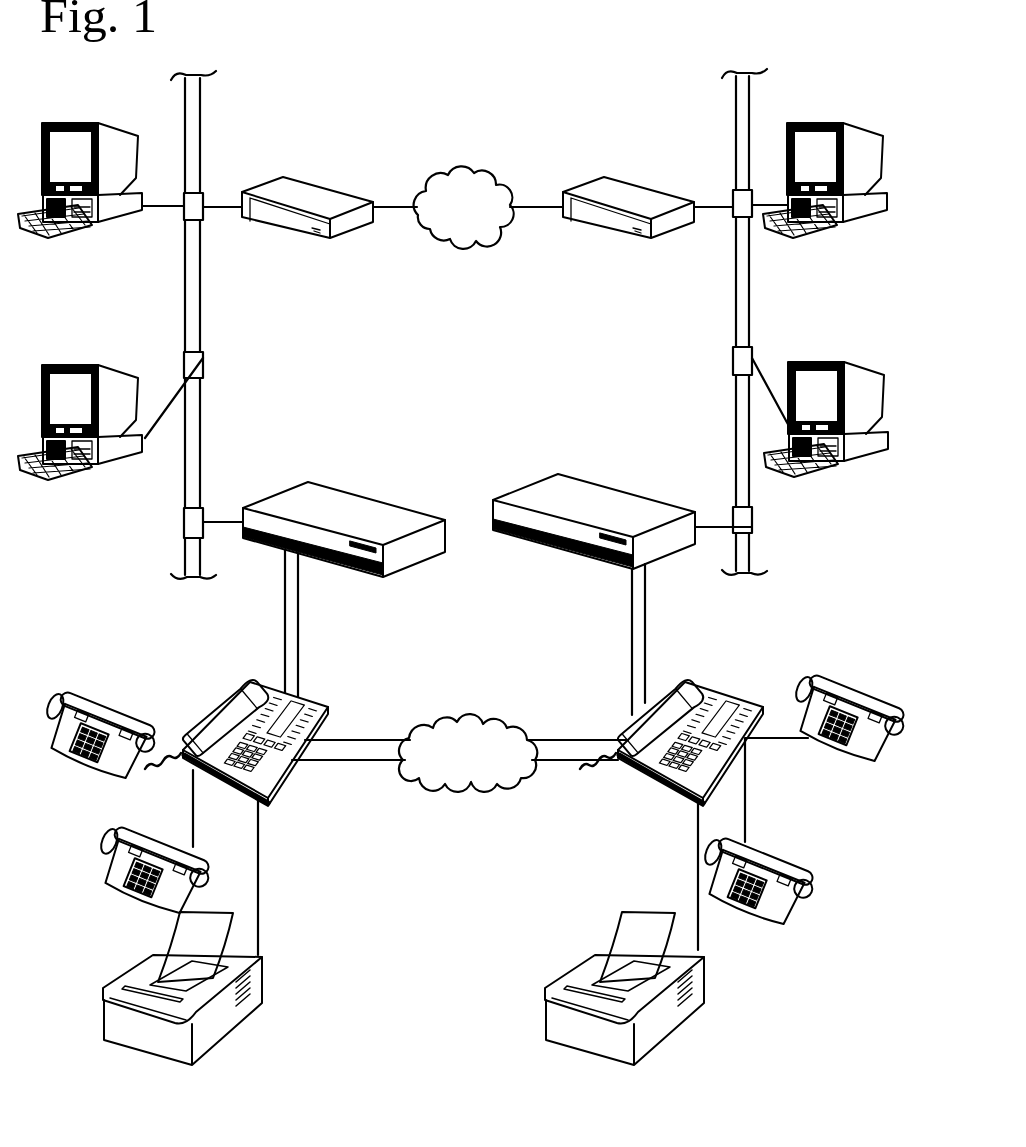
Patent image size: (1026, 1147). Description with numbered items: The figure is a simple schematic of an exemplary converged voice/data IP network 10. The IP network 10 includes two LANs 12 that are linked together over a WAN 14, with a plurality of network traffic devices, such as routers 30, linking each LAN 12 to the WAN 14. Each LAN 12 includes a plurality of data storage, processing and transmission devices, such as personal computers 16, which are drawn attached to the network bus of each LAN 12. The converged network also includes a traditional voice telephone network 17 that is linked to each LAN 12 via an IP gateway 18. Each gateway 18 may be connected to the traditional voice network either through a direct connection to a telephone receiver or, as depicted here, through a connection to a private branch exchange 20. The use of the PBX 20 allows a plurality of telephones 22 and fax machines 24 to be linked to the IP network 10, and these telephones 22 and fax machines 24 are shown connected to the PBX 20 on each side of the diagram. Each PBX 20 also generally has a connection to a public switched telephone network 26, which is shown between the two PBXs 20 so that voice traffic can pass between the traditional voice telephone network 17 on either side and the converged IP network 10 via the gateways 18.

The converged IP network 10 is at (624, 64).
The LAN 12 is at (274, 325).
The WAN 14 is at (471, 174).
The personal computer 16 is at (132, 132).
The traditional voice telephone network 17 is at (374, 842).
The IP gateway 18 is at (335, 489).
The private branch exchange 20 is at (287, 773).
The telephone 22 is at (117, 897).
The fax machine 24 is at (233, 1028).
The public switched telephone network 26 is at (470, 718).
The router 30 is at (310, 184).